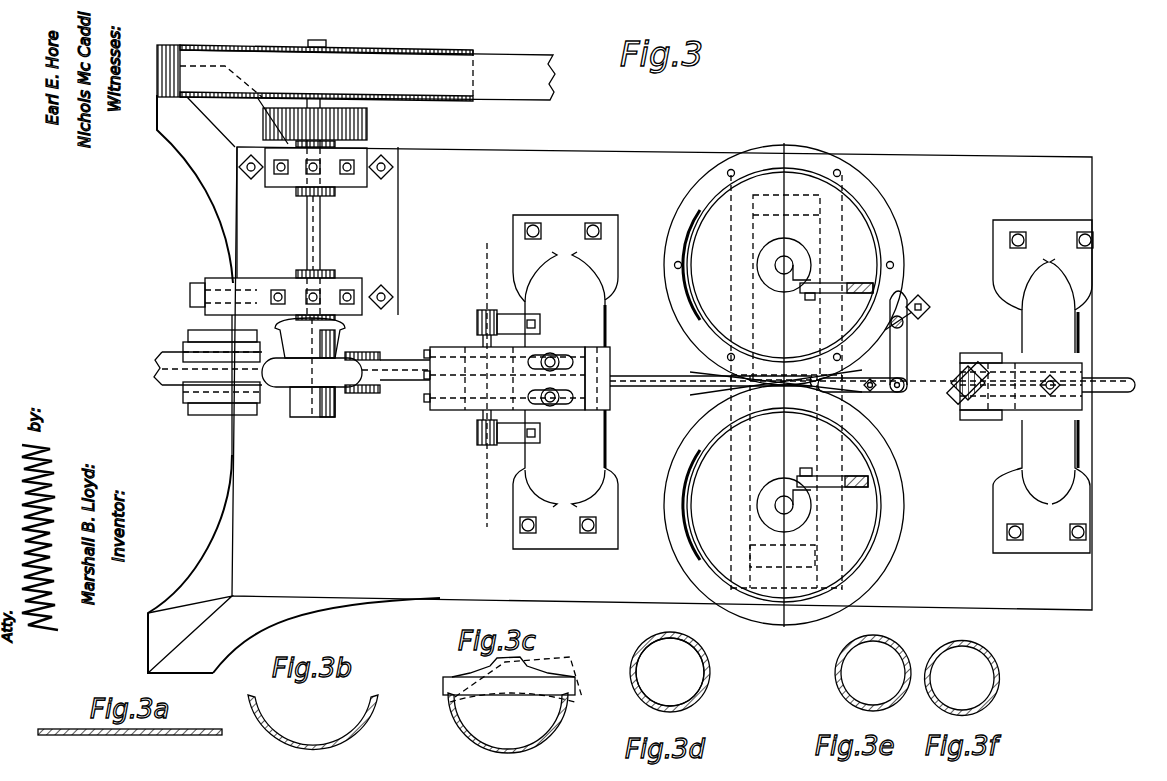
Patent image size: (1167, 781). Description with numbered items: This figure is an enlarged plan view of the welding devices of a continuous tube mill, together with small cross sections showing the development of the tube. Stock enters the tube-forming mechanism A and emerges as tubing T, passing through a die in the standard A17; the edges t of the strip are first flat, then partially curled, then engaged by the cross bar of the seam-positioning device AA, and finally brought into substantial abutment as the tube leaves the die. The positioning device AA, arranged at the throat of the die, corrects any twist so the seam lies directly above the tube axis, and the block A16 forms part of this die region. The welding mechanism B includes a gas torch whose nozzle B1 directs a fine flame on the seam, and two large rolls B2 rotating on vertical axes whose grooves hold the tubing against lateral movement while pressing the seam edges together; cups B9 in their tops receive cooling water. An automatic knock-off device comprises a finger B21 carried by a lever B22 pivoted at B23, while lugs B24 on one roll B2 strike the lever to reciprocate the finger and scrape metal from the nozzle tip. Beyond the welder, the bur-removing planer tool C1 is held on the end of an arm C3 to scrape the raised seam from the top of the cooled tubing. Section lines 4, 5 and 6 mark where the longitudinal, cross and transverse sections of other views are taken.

In FIG. 3, the section line 5— 5 is at (784, 143).
In FIG. 3, the section line 6— 6 is at (481, 265).
In FIG. 3, the section line 4— 4 is at (692, 388).
In FIG. 3, the tube-forming mechanism A is at (295, 414).
In FIG. 3, the tube-seam-positioning device AA is at (504, 378).
In FIG. 3, the carriage clamp A16 is at (592, 405).
In FIG. 3, the standard A17 is at (567, 472).
In FIG. 3C, the standard A17 is at (470, 672).
In FIG. 3, the tubing T is at (652, 392).
In FIG. 3D, the tubing T is at (702, 690).
In FIG. 3A, the welding mechanism B is at (186, 735).
In FIG. 3, the burner tip or nozzle B1 is at (812, 390).
In FIG. 3, the rolls B2 is at (693, 322).
In FIG. 3, the cups or recesses B9 is at (870, 530).
In FIG. 3, the finger or bar B21 is at (850, 385).
In FIG. 3, the lever B22 is at (903, 362).
In FIG. 3, the pivot B23 is at (895, 320).
In FIG. 3, the lugs or pins B24 is at (843, 176).
In FIG. 3, the planer knife, tool or blade C1 is at (975, 402).
In FIG. 3, the arm C3 is at (1053, 402).
In FIG. 3D, the edges of the metal strip t is at (668, 634).